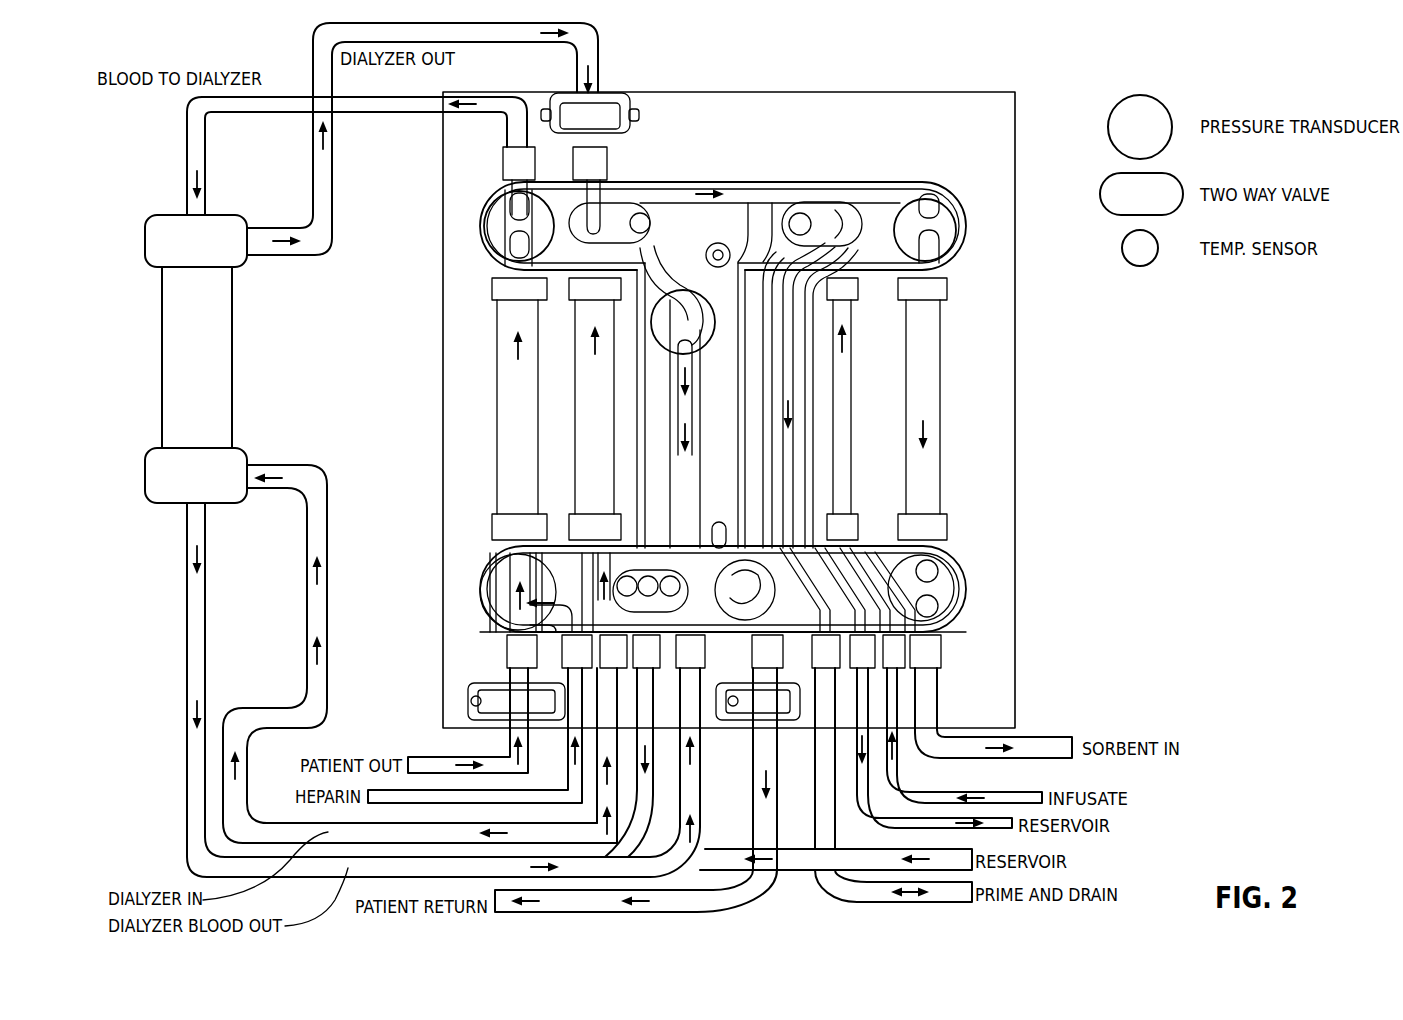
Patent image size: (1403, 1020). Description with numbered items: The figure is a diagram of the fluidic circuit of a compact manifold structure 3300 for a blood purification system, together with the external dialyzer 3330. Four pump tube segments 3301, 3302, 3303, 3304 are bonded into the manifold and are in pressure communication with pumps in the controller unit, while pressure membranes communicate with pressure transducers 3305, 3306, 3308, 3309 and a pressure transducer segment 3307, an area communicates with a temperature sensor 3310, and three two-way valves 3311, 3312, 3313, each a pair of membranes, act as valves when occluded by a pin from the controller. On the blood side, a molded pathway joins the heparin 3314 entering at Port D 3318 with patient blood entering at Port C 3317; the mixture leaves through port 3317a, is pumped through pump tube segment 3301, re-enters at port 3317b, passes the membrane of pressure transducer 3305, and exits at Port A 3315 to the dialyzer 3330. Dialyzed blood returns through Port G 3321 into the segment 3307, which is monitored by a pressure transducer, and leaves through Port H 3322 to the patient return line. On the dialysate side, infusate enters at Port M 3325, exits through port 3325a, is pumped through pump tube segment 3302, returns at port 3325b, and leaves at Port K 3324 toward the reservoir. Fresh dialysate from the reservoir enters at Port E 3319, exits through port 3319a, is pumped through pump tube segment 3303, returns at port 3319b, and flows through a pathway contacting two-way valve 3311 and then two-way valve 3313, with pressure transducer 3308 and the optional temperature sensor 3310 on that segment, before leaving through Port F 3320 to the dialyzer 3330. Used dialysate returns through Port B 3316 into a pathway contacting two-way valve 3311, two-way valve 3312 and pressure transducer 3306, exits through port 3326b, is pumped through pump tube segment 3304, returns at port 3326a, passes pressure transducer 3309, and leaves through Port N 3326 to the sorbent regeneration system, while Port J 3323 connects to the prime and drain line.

The manifold structure 3300 is at (760, 225).
The pump tube segment 3301 is at (517, 452).
The pump tube segment 3302 is at (847, 380).
The pump tube segment 3303 is at (588, 440).
The pump tube segment 3304 is at (928, 343).
The pressure transducer 3305 is at (482, 245).
The pressure transducer 3306 is at (962, 250).
The pressure transducer segment 3307 is at (790, 510).
The pressure transducer 3308 is at (685, 290).
The pressure transducer 3309 is at (955, 580).
The temperature sensor 3310 is at (520, 337).
The two-way valve 3311 is at (607, 165).
The two-way valve 3312 is at (830, 205).
The two-way valve 3313 is at (670, 510).
The heparin fluid flow 3314 is at (545, 590).
The Port A 3315 is at (480, 170).
The Port B 3316 is at (612, 200).
The Port C 3317 is at (507, 650).
The port 3317a is at (518, 527).
The port 3317b is at (518, 287).
The Port D 3318 is at (565, 665).
The Port E 3319 is at (593, 665).
The port 3319a is at (588, 520).
The port 3319b is at (587, 290).
The Port F 3320 is at (630, 665).
The Port G 3321 is at (678, 655).
The Port H 3322 is at (783, 655).
The Port J 3323 is at (840, 655).
The Port K 3324 is at (875, 655).
The Port M 3325 is at (905, 650).
The port 3325a is at (843, 528).
The port 3325b is at (843, 290).
The Port N 3326 is at (941, 645).
The port 3326a is at (925, 528).
The port 3326b is at (925, 287).
The dialyzer 3330 is at (230, 366).